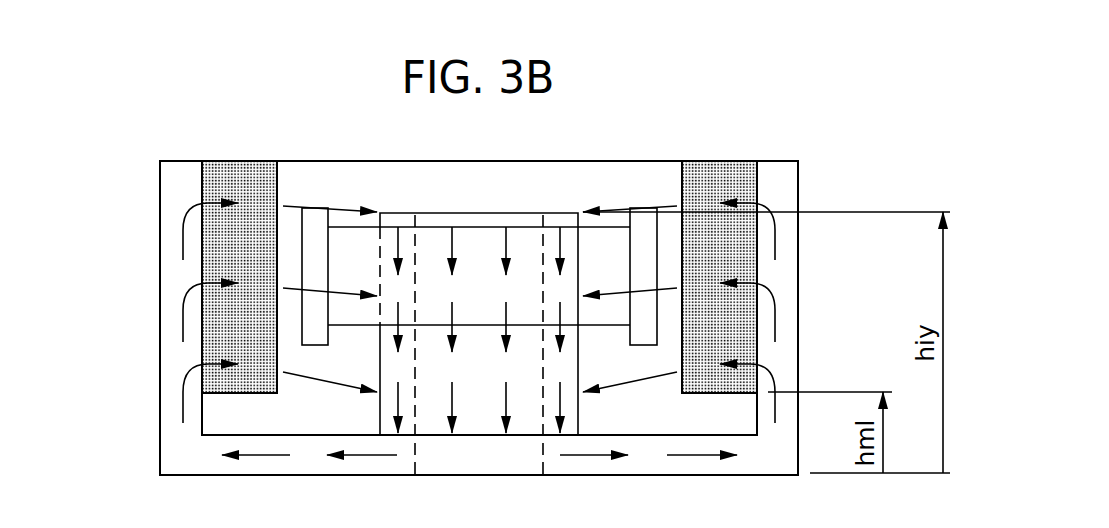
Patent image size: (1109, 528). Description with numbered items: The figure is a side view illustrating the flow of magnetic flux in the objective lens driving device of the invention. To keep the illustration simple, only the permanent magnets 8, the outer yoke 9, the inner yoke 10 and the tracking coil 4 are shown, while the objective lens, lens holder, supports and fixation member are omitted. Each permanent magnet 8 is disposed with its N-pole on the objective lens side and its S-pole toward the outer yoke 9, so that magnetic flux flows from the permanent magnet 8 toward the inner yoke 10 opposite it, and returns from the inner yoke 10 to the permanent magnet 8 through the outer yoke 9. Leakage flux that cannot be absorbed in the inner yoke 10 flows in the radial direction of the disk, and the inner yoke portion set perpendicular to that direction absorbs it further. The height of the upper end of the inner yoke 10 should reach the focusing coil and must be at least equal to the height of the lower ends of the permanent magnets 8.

The tracking coil 4 is at (313, 218).
The permanent magnet 8 is at (242, 172).
The outer yoke 9 is at (168, 203).
The inner yoke 10 is at (475, 222).